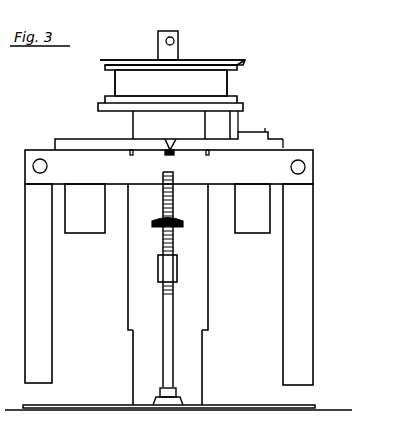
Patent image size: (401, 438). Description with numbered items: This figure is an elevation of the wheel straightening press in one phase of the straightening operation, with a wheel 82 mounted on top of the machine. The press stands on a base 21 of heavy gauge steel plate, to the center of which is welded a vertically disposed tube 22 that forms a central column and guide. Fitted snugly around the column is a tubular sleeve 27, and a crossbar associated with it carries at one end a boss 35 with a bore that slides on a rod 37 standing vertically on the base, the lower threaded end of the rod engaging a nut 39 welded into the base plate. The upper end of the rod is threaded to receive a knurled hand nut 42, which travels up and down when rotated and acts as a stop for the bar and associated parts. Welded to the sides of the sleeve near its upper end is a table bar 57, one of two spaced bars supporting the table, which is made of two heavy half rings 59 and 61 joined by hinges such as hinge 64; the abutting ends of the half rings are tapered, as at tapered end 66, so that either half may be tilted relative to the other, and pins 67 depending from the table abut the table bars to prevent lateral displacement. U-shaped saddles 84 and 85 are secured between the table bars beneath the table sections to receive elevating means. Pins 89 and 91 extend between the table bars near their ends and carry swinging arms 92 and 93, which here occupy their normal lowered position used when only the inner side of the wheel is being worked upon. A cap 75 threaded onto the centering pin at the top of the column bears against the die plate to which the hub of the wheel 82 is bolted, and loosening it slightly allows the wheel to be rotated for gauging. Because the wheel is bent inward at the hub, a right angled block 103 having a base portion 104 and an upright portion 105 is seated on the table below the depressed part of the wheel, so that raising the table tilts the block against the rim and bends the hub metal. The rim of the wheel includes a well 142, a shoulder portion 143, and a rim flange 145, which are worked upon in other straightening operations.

The base 21 is at (103, 405).
The tube 22 is at (193, 357).
The tubular sleeve 27 is at (203, 265).
The boss 35 is at (163, 270).
The rod 37 is at (170, 318).
The nut 39 is at (178, 392).
The knurled hand nut 42 is at (152, 225).
The table bar 57 is at (169, 167).
The half ring 59 is at (284, 143).
The half ring 61 is at (62, 137).
The hinge 64 is at (175, 156).
The tapered end 66 is at (167, 139).
The pin 67 is at (210, 153).
The cap 75 is at (172, 48).
The wheel 82 is at (241, 57).
The saddle 84 is at (252, 208).
The saddle 85 is at (85, 208).
The pin 89 is at (305, 167).
The pin 91 is at (33, 166).
The swinging arm 92 is at (298, 284).
The swinging arm 93 is at (38, 283).
The right angled block 103 is at (240, 128).
The base portion 104 is at (267, 133).
The upright portion 105 is at (240, 118).
The well 142 is at (118, 86).
The shoulder portion 143 is at (107, 68).
The rim flange 145 is at (100, 62).